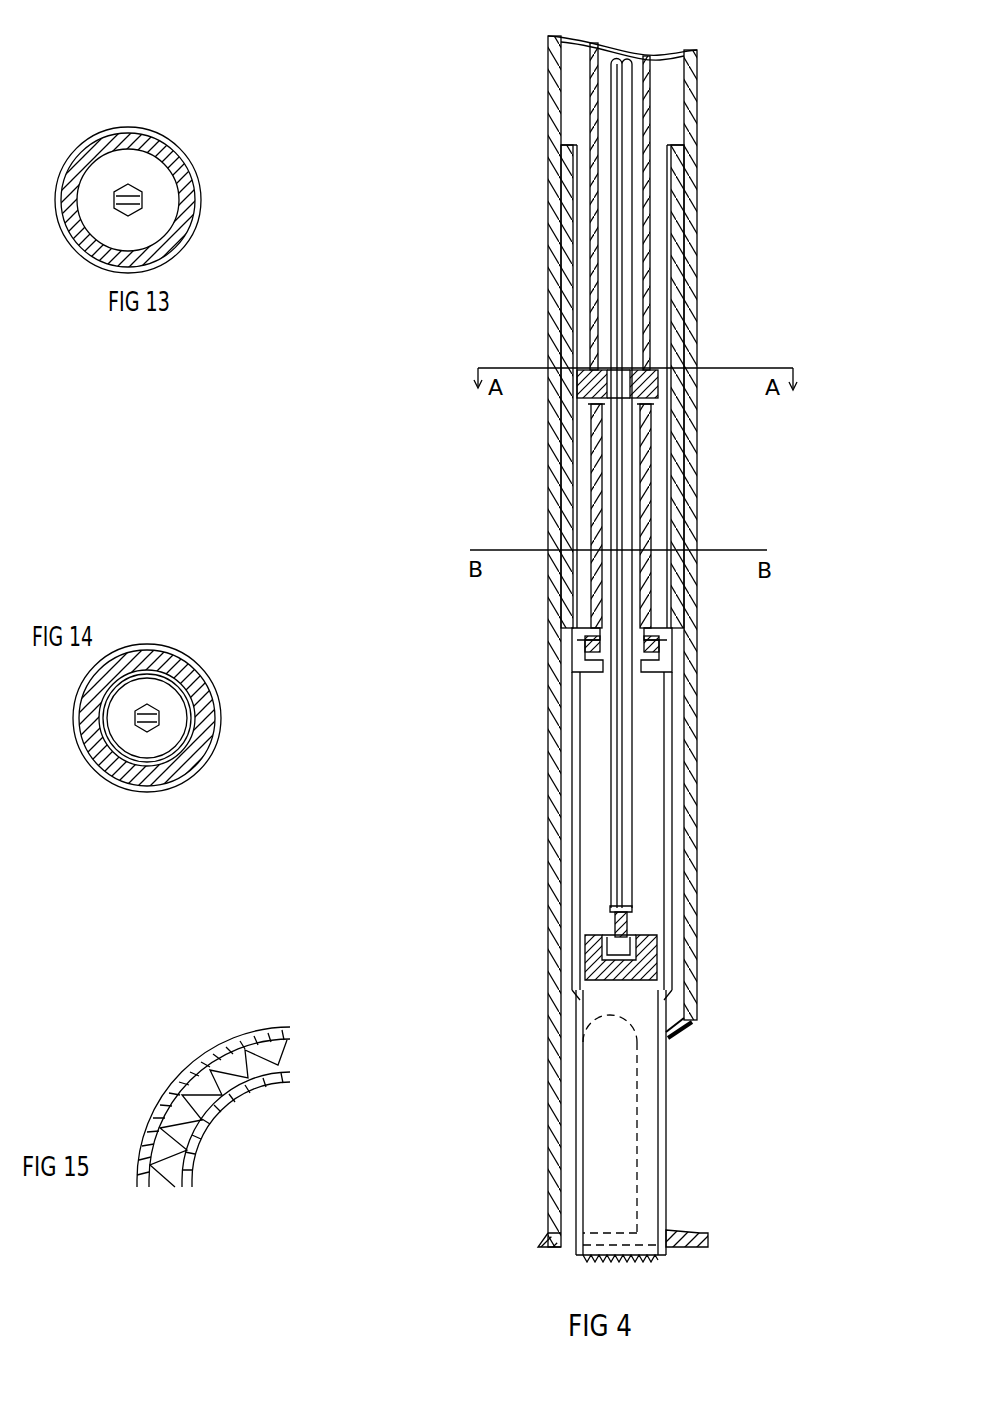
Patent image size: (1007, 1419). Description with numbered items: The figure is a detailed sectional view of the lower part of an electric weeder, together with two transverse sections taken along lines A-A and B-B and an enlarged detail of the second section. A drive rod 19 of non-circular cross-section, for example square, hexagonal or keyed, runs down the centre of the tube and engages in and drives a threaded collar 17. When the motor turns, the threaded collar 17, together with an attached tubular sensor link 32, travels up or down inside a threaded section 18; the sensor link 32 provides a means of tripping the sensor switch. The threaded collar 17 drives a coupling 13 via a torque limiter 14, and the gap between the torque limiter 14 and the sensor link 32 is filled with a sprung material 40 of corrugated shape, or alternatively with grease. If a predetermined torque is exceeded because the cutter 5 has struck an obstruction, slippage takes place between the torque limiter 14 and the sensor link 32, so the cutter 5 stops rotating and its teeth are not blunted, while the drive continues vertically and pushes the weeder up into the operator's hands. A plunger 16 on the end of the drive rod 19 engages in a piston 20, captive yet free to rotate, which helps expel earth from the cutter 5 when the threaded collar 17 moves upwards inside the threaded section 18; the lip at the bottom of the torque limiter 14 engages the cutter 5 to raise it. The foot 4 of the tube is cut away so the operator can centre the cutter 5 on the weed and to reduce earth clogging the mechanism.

In FIG. 4, the foot 4 is at (715, 1243).
In FIG. 4, the cutter 5 is at (580, 1190).
In FIG. 4, the coupling 13 is at (650, 645).
In FIG. 4, the torque limiter 14 is at (640, 492).
In FIG. 14, the torque limiter 14 is at (183, 693).
In FIG. 15, the torque limiter 14 is at (218, 1092).
In FIG. 4, the plunger 16 is at (615, 915).
In FIG. 4, the threaded collar 17 is at (650, 382).
In FIG. 13, the threaded collar 17 is at (102, 222).
In FIG. 4, the threaded section 18 is at (573, 440).
In FIG. 4, the drive rod 19 is at (627, 130).
In FIG. 13, the drive rod 19 is at (120, 186).
In FIG. 4, the piston 20 is at (648, 950).
In FIG. 4, the sensor link 32 is at (596, 77).
In FIG. 13, the sensor link 32 is at (180, 178).
In FIG. 14, the sensor link 32 is at (108, 767).
In FIG. 15, the sensor link 32 is at (172, 1088).
In FIG. 15, the sprung material 40 is at (280, 1048).